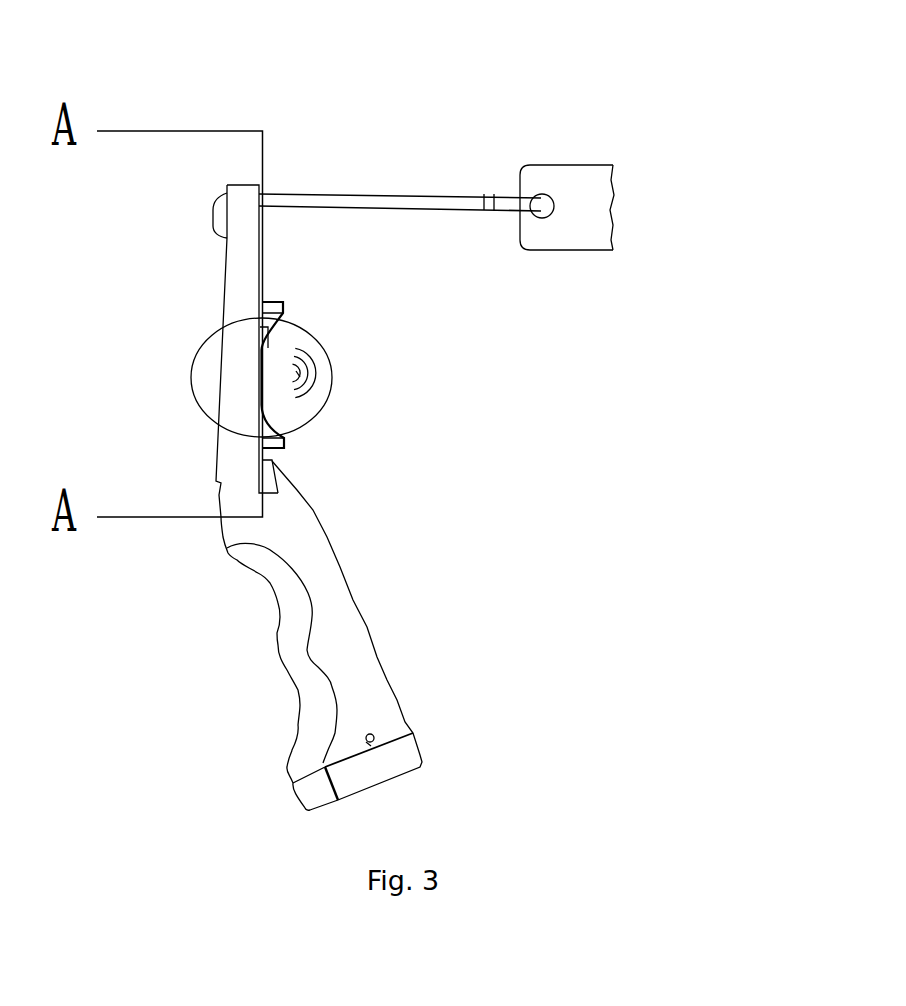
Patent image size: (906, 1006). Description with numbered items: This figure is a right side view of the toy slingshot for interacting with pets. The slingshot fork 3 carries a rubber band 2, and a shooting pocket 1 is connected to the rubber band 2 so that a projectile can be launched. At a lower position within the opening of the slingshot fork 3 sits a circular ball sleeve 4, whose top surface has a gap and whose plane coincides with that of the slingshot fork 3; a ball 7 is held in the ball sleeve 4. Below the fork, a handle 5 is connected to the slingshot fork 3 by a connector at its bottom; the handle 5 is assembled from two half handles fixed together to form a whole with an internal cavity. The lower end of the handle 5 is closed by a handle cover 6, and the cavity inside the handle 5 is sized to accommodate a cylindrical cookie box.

The shooting pocket 1 is at (563, 173).
The rubber band 2 is at (280, 200).
The slingshot fork 3 is at (283, 308).
The ball sleeve 4 is at (238, 424).
The handle 5 is at (328, 597).
The handle cover 6 is at (378, 760).
The ball 7 is at (330, 375).